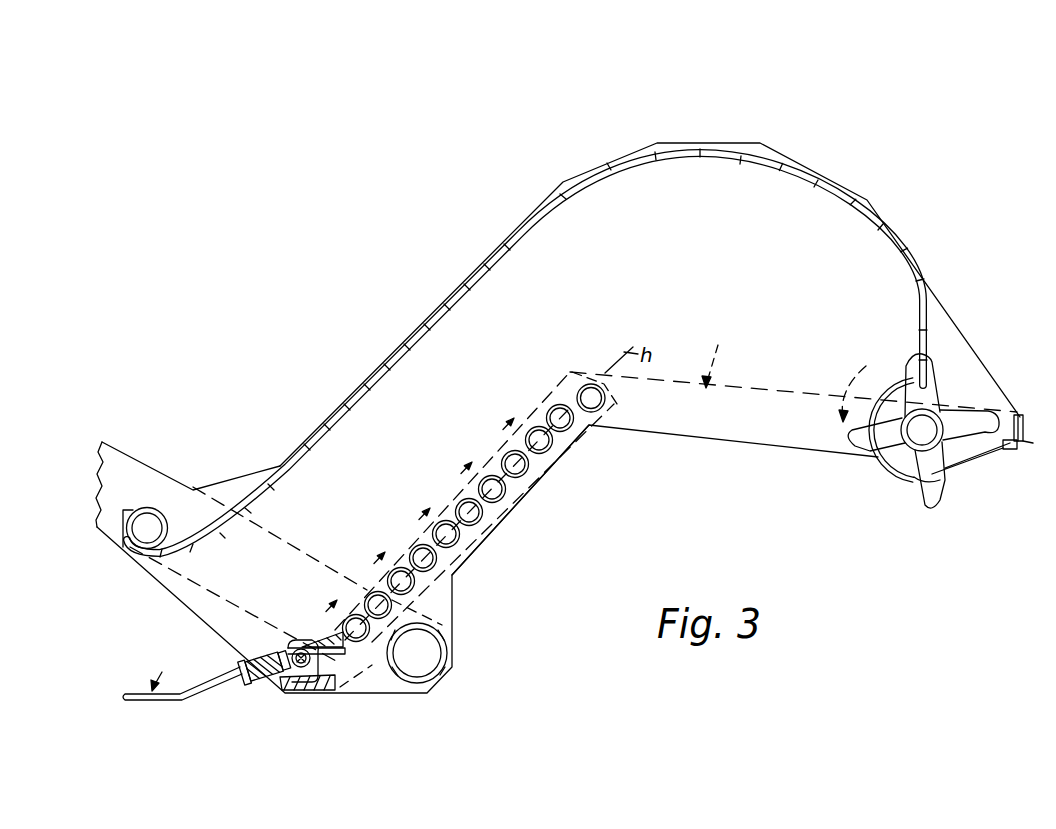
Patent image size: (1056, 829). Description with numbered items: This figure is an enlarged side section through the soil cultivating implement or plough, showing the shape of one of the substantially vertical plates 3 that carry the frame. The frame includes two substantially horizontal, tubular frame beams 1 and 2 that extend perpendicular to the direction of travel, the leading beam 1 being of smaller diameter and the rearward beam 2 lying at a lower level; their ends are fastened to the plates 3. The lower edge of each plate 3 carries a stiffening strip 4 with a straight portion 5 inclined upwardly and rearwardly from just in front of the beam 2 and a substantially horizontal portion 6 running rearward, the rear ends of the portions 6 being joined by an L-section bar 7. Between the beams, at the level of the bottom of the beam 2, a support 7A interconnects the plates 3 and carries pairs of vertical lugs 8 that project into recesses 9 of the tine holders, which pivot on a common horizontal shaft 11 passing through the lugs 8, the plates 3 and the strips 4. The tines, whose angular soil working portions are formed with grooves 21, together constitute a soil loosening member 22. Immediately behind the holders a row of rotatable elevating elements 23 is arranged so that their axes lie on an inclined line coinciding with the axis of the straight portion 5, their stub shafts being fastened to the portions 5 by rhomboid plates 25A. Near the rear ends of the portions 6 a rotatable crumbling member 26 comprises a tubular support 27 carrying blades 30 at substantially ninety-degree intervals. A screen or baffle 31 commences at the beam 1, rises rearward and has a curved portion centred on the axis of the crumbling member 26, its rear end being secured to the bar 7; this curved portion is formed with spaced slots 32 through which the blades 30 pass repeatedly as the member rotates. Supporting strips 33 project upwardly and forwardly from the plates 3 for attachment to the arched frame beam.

The leading frame beam 1 is at (146, 512).
The rearward frame beam 2 is at (445, 655).
The vertical plate 3 is at (536, 236).
The stiffening strip 4 is at (713, 354).
The straight portion 5 is at (492, 446).
The horizontal portion 6 is at (738, 402).
The bar 7 is at (1016, 447).
The support 7A is at (320, 690).
The lug 8 is at (307, 645).
The recess 9 is at (290, 650).
The shaft 11 is at (297, 667).
The groove 21 is at (192, 698).
The soil loosening member 22 is at (150, 671).
The rotatable elevating element 23 is at (518, 546).
The rhomboid plate 25A is at (570, 458).
The crumbling member 26 is at (936, 414).
The tubular support 27 is at (888, 468).
The blade 30 is at (929, 487).
The screen or baffle 31 is at (630, 163).
The slot 32 is at (898, 400).
The supporting strip 33 is at (123, 465).